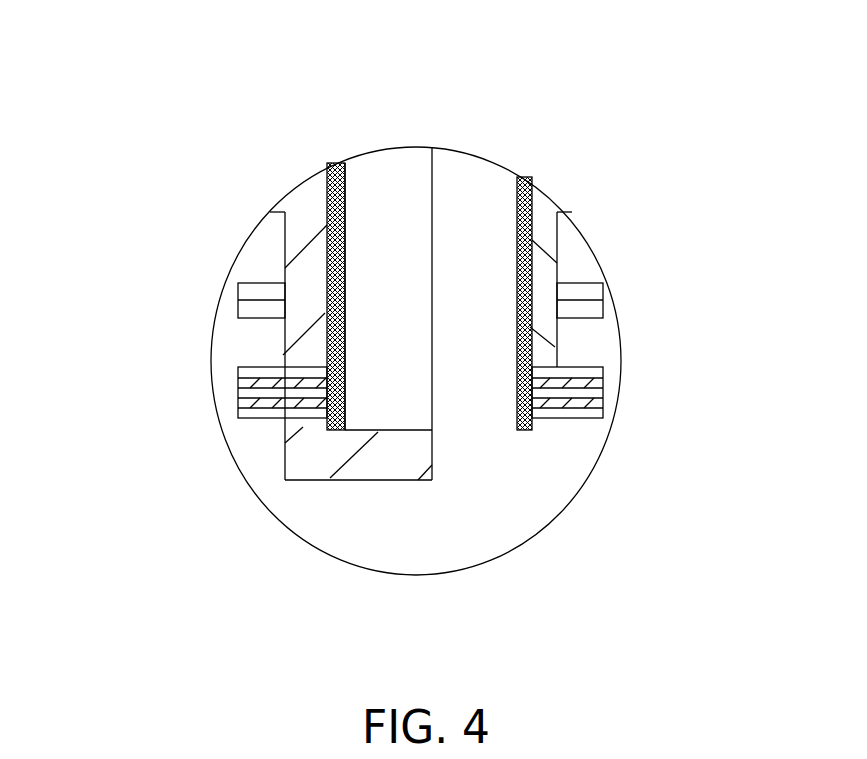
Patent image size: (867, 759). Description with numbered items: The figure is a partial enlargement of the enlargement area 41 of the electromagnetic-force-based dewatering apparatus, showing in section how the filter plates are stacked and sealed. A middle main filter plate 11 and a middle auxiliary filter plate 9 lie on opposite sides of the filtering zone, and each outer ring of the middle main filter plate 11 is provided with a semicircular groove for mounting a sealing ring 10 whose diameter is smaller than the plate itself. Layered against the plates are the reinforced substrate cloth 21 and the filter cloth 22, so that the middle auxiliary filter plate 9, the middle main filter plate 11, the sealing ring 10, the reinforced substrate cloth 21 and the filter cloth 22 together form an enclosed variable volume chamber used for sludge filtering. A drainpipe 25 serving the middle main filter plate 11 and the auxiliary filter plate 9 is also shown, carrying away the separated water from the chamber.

The enlargement area 41 is at (150, 67).
The reinforced substrate cloth 21 is at (332, 163).
The filter cloth 22 is at (343, 163).
The middle main filter plate 11 is at (545, 220).
The drainpipe 25 is at (250, 316).
The middle auxiliary filter plate 9 is at (383, 460).
The sealing ring 10 is at (540, 432).